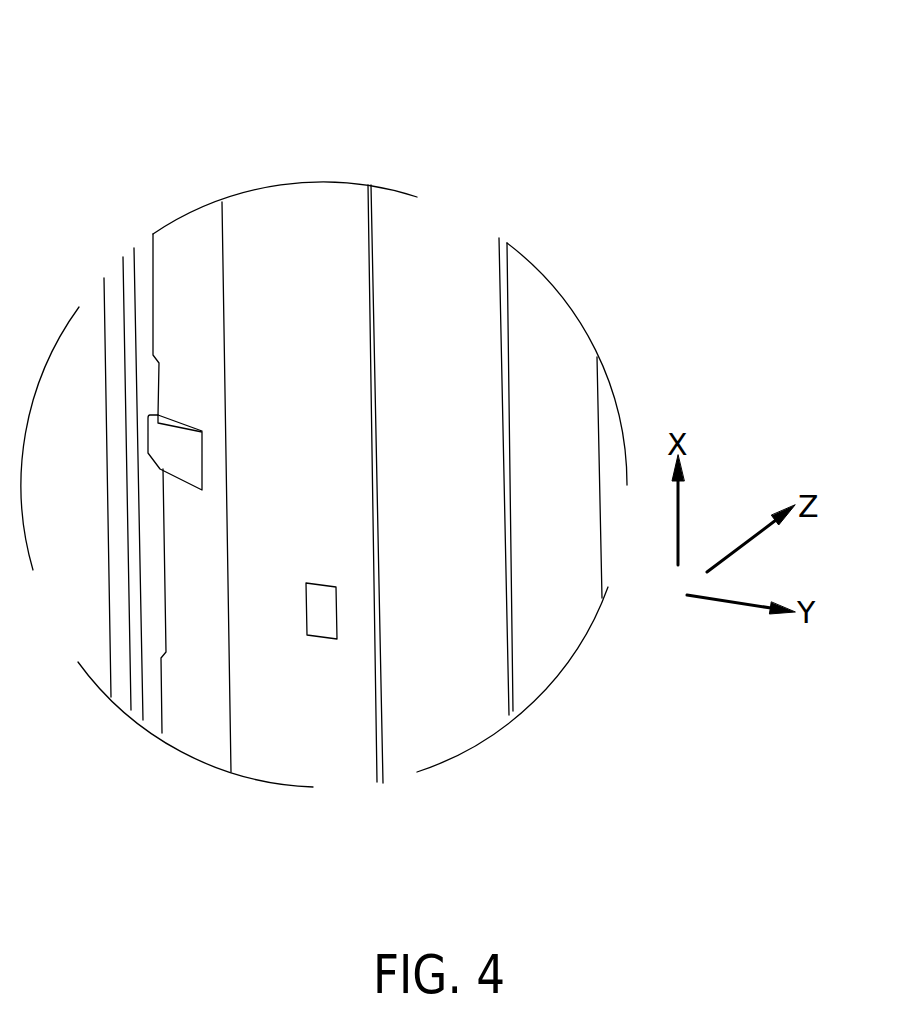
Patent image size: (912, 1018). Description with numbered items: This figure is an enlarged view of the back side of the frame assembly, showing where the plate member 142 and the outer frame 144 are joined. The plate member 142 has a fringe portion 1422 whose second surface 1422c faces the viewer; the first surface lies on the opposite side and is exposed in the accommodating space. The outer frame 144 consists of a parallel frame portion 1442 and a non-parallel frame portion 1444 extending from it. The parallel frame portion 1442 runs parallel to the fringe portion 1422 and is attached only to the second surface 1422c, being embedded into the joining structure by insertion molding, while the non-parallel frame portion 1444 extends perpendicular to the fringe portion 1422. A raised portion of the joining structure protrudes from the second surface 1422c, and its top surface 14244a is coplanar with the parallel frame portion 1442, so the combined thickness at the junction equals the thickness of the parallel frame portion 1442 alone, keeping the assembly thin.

The outer frame 144 is at (277, 67).
The non-parallel frame portion 1444 is at (129, 303).
The parallel frame portion 1442 is at (260, 238).
The fringe portion 1422 is at (440, 723).
The plate member 142 is at (550, 476).
The second surface 1422c is at (483, 519).
The top surface of the raised portion 14244a is at (324, 613).